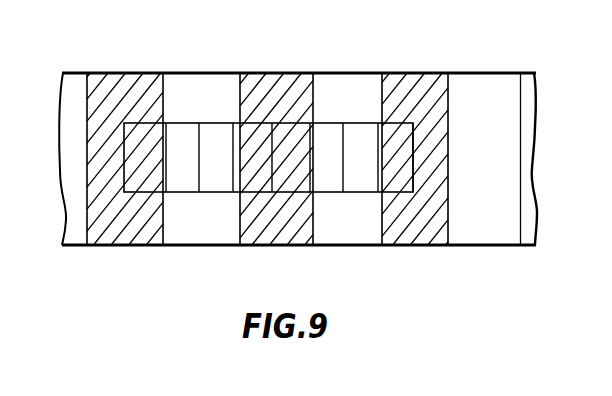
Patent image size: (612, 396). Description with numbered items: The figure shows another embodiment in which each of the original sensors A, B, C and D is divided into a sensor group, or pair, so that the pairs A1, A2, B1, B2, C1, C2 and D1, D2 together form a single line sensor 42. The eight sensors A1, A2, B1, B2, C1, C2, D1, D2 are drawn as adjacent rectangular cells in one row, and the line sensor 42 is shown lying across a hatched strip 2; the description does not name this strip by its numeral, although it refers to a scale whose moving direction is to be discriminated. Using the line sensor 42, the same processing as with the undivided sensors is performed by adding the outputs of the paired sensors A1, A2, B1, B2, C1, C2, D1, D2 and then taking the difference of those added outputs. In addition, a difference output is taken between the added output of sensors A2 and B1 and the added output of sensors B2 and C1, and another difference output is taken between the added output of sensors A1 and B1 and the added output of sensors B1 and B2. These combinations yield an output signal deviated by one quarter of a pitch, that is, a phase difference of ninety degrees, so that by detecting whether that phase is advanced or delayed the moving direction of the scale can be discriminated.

The magnetic recording medium 2 is at (492, 73).
The line sensor 42 is at (268, 207).
The sensor A1 is at (148, 157).
The sensor A2 is at (185, 157).
The sensor B1 is at (219, 157).
The sensor B2 is at (257, 157).
The sensor C1 is at (294, 157).
The sensor C2 is at (331, 157).
The sensor D1 is at (363, 157).
The sensor D2 is at (399, 157).